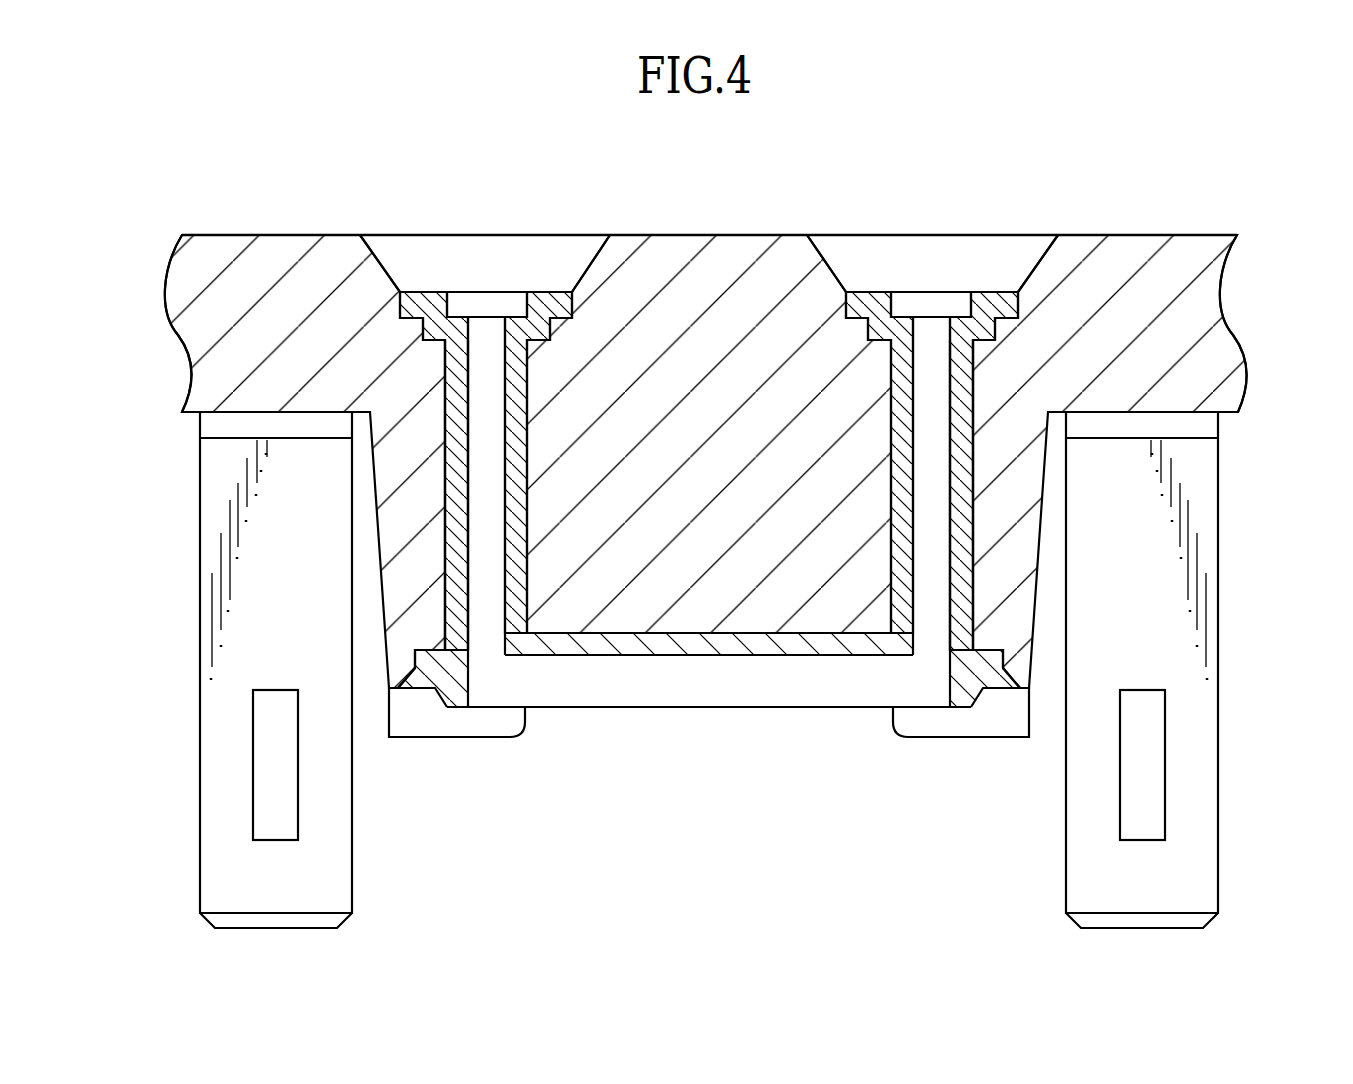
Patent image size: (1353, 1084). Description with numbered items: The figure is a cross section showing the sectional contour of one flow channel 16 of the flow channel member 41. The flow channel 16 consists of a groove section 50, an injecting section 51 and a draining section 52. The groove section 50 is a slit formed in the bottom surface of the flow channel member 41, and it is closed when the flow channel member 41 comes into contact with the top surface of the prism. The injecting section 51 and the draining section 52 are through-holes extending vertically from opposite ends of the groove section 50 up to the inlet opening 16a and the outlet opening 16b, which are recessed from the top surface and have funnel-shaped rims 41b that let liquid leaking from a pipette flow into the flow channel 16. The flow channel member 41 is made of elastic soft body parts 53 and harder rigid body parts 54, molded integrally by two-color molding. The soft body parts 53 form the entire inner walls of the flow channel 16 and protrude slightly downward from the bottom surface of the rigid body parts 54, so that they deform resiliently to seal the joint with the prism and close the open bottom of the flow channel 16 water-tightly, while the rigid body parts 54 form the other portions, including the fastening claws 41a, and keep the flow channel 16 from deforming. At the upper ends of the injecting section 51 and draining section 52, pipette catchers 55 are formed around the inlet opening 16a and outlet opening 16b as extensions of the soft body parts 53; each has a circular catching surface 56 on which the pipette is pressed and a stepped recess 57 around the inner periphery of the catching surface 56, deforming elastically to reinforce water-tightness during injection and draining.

The flow channel member 41 is at (1122, 172).
The fastening claws 41a is at (253, 763).
The funnel-shaped rims 41b is at (573, 245).
The groove section 50 is at (718, 686).
The injecting section 51 is at (485, 530).
The draining section 52 is at (930, 520).
The soft body parts 53 is at (457, 646).
The rigid body parts 54 is at (180, 330).
The pipette catchers 55 is at (516, 258).
The catching surface 56 is at (420, 292).
The stepped recess 57 is at (457, 315).
The flow channel 16 is at (782, 738).
The inlet opening 16a is at (478, 317).
The outlet opening 16b is at (928, 314).